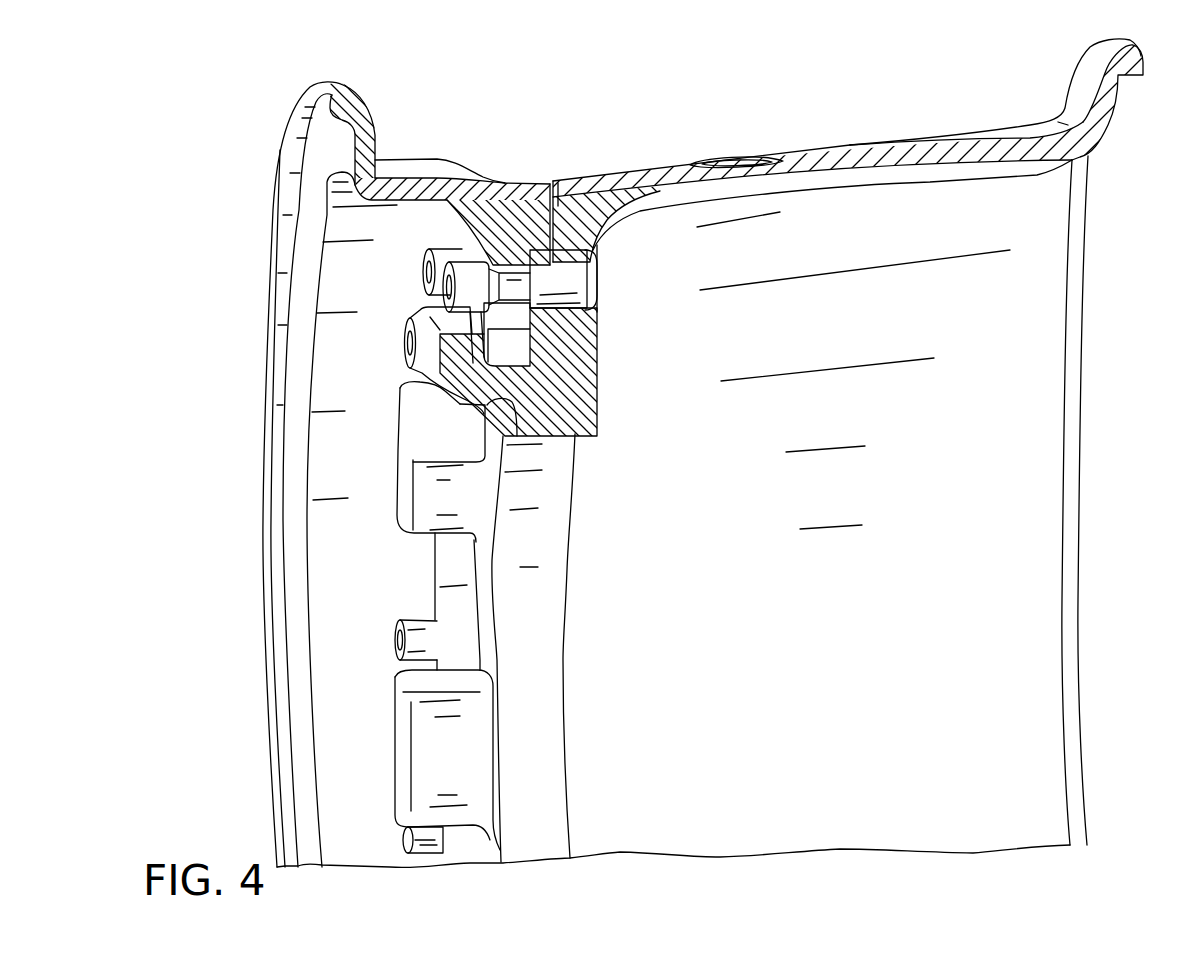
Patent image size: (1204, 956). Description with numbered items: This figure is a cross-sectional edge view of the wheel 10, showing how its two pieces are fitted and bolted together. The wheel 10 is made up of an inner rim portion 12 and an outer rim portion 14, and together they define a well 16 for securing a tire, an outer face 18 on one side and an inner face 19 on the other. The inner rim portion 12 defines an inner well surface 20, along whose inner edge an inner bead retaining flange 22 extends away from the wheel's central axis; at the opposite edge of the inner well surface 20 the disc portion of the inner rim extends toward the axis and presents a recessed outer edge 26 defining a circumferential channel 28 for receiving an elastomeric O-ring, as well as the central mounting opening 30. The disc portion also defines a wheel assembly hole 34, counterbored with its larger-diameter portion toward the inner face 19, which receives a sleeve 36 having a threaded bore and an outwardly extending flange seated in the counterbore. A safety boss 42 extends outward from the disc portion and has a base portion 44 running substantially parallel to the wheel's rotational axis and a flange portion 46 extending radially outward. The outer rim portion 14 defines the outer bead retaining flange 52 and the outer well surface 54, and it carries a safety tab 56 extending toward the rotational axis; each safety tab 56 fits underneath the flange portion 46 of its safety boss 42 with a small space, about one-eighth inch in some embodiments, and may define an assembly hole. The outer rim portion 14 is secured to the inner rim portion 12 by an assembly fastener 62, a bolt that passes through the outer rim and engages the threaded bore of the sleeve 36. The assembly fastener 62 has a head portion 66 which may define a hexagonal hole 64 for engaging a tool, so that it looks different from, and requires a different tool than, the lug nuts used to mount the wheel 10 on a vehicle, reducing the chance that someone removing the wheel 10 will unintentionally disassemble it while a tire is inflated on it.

The wheel 10 is at (767, 118).
The inner rim portion 12 is at (858, 147).
The outer rim portion 14 is at (273, 297).
The well 16 is at (568, 164).
The outer face 18 is at (262, 433).
The inner face 19 is at (1092, 319).
The inner well surface 20 is at (972, 135).
The inner bead retaining flange 22 is at (1063, 78).
The recessed outer edge 26 is at (588, 187).
The circumferential channel 28 is at (630, 190).
The central mounting opening 30 is at (549, 799).
The wheel assembly hole 34 is at (602, 233).
The sleeve 36 is at (577, 288).
The safety boss 42 is at (445, 444).
The base portion 44 is at (484, 459).
The flange portion 46 is at (440, 415).
The outer bead retaining flange 52 is at (308, 88).
The outer well surface 54 is at (437, 160).
The safety tab 56 is at (463, 478).
The assembly fastener 62 is at (505, 265).
The hexagonal hole 64 is at (452, 283).
The head portion 66 is at (455, 275).